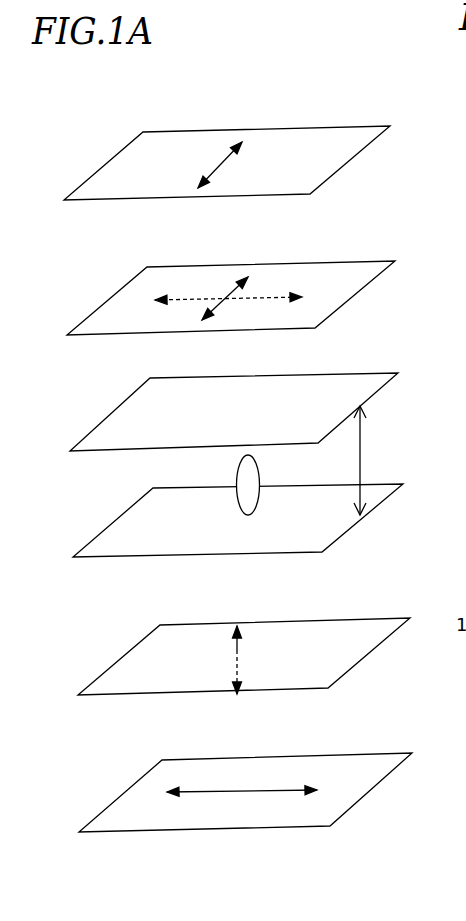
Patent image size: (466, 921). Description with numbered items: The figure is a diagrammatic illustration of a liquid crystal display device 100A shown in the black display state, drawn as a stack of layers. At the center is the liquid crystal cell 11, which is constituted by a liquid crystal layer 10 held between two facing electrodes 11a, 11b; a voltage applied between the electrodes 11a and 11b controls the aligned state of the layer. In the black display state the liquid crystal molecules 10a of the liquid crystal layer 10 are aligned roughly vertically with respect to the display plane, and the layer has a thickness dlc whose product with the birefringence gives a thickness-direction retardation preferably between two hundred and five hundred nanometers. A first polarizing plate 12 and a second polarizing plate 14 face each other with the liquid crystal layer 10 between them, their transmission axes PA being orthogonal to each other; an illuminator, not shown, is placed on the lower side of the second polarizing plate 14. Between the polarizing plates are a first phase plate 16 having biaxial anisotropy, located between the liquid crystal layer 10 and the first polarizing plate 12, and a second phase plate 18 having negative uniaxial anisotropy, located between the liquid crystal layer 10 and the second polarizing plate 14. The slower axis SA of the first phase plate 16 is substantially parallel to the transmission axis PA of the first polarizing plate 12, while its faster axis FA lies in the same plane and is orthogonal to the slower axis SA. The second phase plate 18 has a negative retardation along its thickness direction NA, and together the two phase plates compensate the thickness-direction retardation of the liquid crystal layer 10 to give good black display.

The liquid crystal display device 100A is at (361, 107).
The first polarizing plate 12 is at (345, 165).
The first phase plate 16 is at (345, 305).
The liquid crystal layer 10 is at (225, 453).
The liquid crystal cell 11 is at (210, 463).
The electrode 11a is at (107, 423).
The electrode 11b is at (234, 520).
The liquid crystal molecule 10a is at (258, 493).
The second phase plate 18 is at (378, 645).
The second polarizing plate 14 is at (360, 802).
The transmission axis PA is at (215, 166).
The faster axis FA is at (188, 300).
The slower axis SA is at (233, 292).
The thickness direction NA is at (238, 650).
The thickness of the liquid crystal layer dlc is at (363, 467).